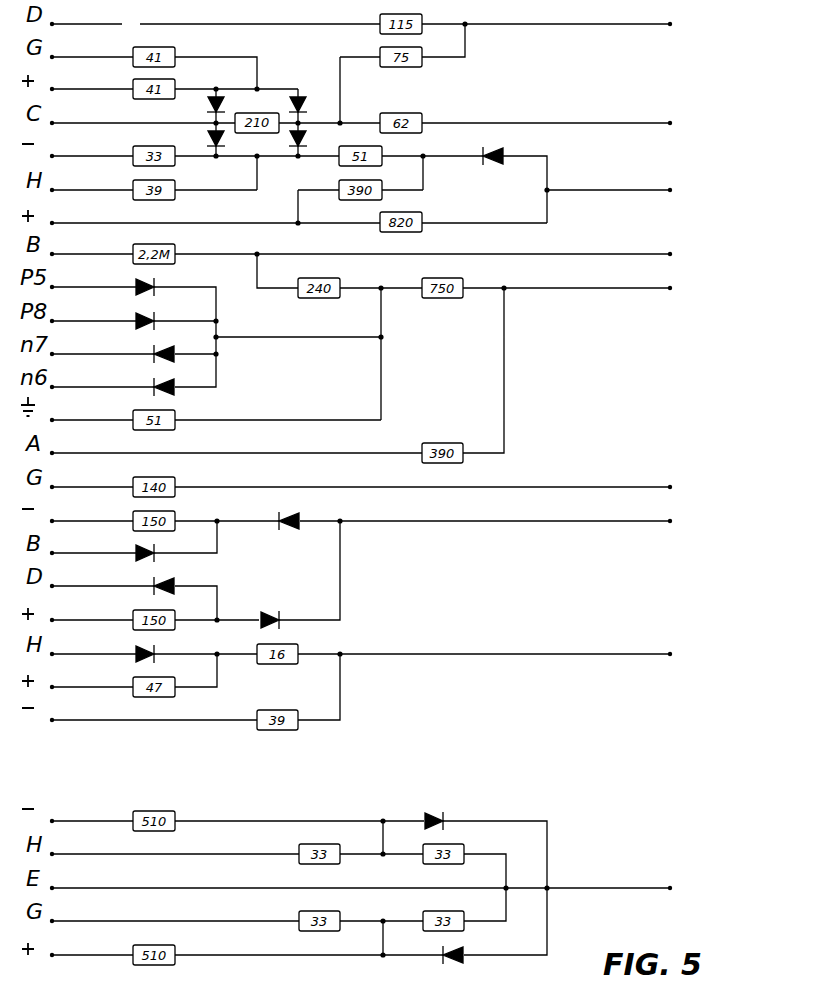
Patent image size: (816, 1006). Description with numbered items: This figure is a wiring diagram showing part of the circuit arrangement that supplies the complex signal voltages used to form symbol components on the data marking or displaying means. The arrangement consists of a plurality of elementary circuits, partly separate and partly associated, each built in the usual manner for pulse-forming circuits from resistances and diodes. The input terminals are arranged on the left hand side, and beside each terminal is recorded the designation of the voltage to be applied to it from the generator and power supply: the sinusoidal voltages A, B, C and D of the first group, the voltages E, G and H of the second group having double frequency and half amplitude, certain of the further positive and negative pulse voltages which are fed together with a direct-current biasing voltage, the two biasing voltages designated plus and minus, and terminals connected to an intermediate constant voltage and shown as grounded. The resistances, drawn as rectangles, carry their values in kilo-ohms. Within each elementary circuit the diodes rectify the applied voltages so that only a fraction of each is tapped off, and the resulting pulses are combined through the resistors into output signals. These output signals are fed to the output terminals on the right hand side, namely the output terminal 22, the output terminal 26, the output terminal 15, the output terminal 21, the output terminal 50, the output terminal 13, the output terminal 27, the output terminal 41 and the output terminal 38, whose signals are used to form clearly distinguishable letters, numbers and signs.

The output terminal 22 is at (591, 17).
The output terminal 26 is at (591, 115).
The output terminal 15 is at (632, 183).
The output terminal 21 is at (487, 248).
The output terminal 50 is at (610, 281).
The output terminal 13 is at (508, 480).
The output terminal 27 is at (528, 514).
The output terminal 41 is at (528, 648).
The output terminal 38 is at (632, 881).